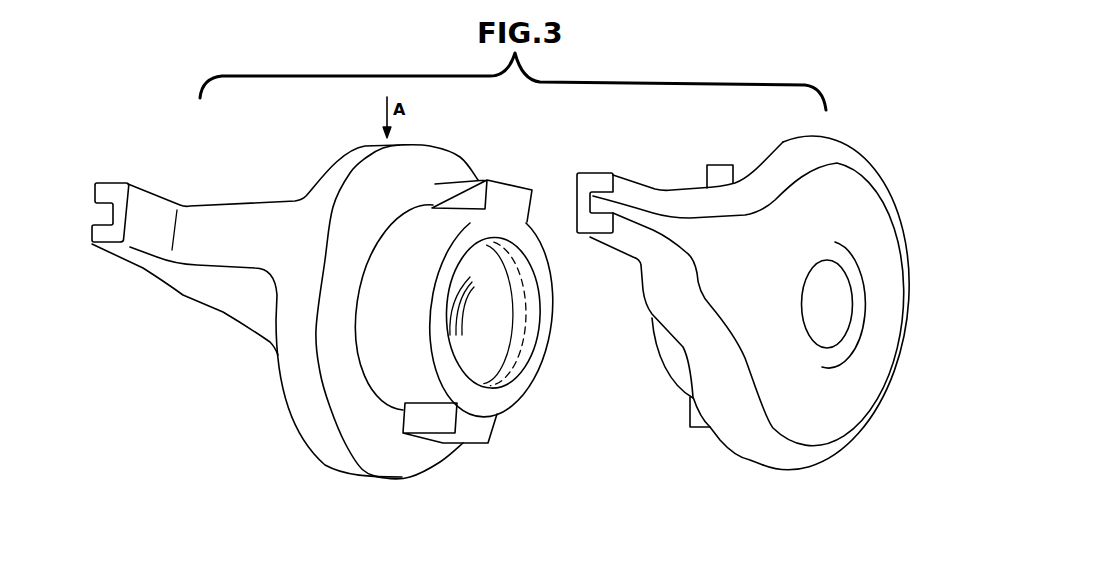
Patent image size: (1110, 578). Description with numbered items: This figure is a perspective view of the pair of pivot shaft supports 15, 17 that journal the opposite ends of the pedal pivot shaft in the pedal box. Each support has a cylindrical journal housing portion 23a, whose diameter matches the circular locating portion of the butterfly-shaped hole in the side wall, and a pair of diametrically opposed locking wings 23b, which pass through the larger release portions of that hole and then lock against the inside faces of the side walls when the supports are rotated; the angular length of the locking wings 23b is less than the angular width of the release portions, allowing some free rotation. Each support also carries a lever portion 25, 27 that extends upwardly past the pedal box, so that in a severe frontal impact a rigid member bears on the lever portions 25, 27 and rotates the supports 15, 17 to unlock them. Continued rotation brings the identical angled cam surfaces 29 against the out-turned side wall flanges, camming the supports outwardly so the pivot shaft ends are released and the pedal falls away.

The pivot shaft support 15 is at (893, 333).
The pivot shaft support 17 is at (338, 457).
The cylindrical journal housing portion 23a is at (380, 355).
The locking wing 23b is at (513, 197).
The lever portion 25 is at (627, 180).
The lever portion 27 is at (132, 250).
The angled cam surface 29 is at (195, 240).